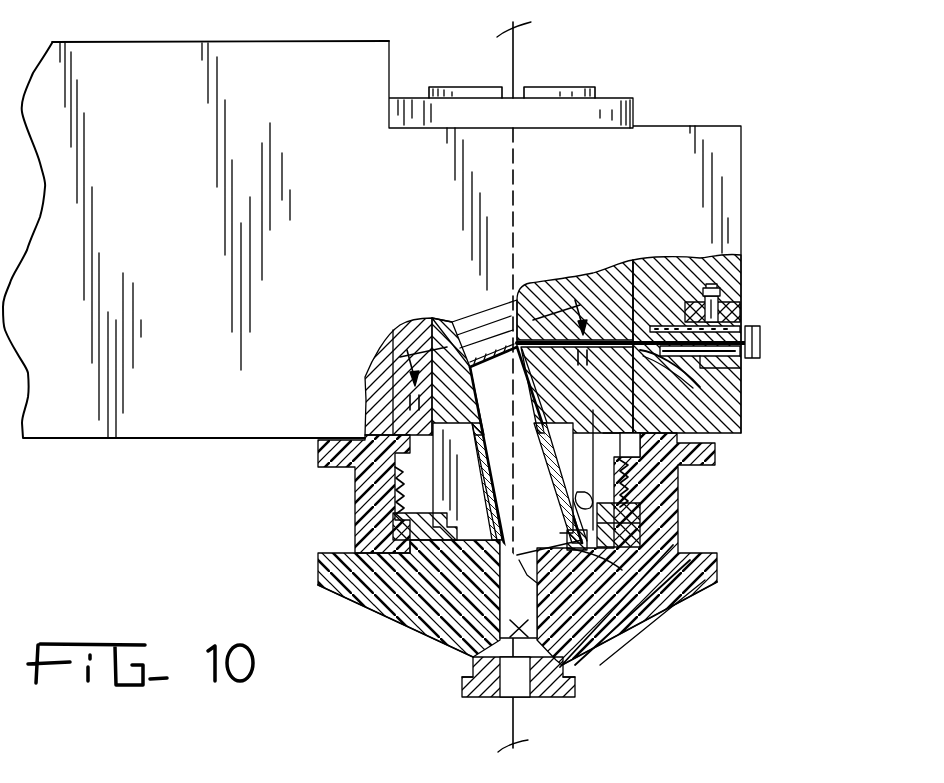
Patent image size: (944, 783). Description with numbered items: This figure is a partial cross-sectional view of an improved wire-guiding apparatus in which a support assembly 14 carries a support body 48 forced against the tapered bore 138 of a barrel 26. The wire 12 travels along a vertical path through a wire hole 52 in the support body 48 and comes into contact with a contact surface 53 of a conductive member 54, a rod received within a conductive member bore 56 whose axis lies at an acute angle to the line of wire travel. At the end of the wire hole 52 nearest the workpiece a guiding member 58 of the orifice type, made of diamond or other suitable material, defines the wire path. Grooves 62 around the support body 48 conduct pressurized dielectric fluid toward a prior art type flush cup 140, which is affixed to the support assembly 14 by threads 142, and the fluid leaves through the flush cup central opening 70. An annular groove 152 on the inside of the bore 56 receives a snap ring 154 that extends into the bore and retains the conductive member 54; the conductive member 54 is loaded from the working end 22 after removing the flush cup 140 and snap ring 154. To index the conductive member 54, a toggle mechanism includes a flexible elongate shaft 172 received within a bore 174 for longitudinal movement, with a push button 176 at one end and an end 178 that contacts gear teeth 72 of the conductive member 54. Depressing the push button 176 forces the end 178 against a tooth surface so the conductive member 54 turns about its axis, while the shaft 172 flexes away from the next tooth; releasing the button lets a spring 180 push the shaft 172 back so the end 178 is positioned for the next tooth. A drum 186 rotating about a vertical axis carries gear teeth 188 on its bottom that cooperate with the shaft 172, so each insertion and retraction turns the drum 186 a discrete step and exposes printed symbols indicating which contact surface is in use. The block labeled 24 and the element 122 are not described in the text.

The wire 12 is at (515, 62).
The support assembly 14 is at (700, 92).
The working end 22 is at (379, 633).
The housing block 24 is at (153, 253).
The barrel 26 is at (707, 438).
The support body 48 is at (517, 553).
The wire hole 52 is at (467, 615).
The contact surface 53 is at (625, 484).
The conductive member 54 is at (500, 433).
The conductive member bore 56 is at (457, 521).
The guiding member 58 is at (522, 624).
The grooves 62 is at (500, 531).
The flush cup central opening 70 is at (545, 681).
The gear teeth 72 is at (465, 360).
The flange notch 122 is at (553, 698).
The tapered bore 138 is at (517, 543).
The flush cup 140 is at (650, 600).
The threads 142 is at (622, 494).
The annular groove 152 is at (450, 593).
The snap ring 154 is at (640, 580).
The flexible elongate shaft 172 is at (612, 265).
The bore 174 is at (640, 350).
The push button 176 is at (757, 334).
The end 178 is at (519, 305).
The spring 180 is at (700, 358).
The drum 186 is at (742, 325).
The gear teeth 188 is at (684, 295).